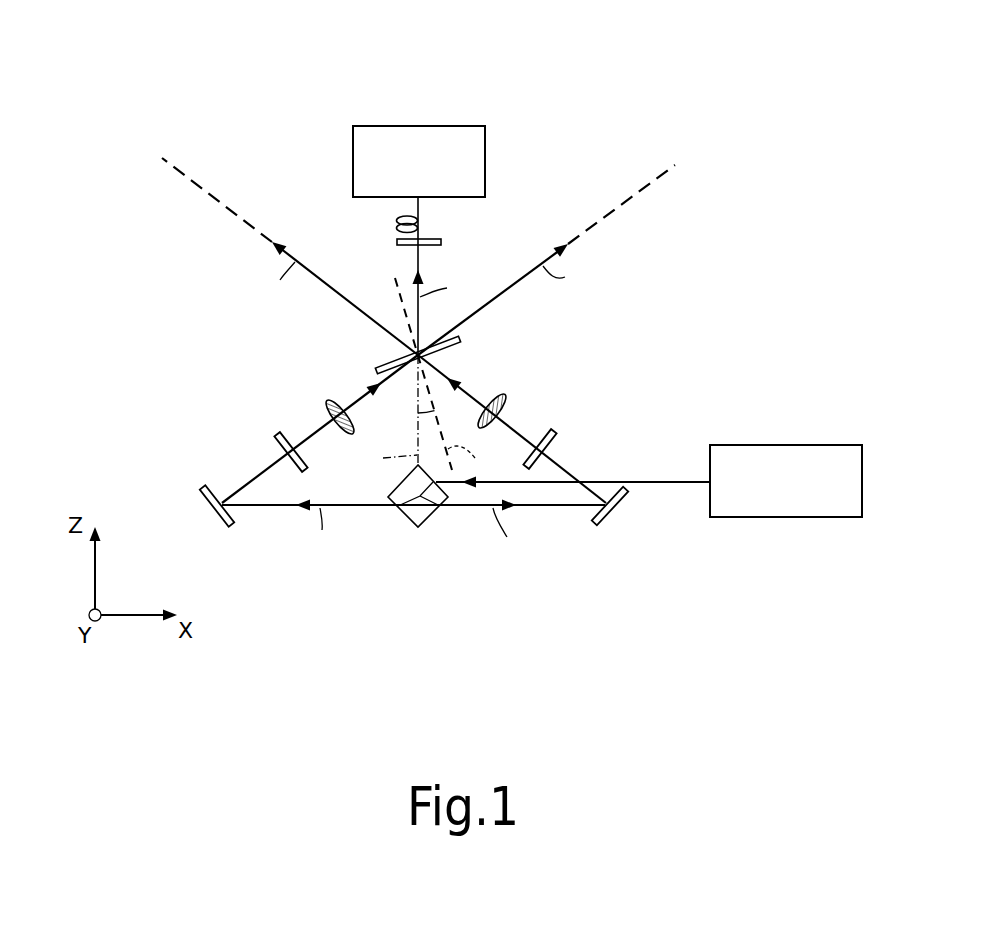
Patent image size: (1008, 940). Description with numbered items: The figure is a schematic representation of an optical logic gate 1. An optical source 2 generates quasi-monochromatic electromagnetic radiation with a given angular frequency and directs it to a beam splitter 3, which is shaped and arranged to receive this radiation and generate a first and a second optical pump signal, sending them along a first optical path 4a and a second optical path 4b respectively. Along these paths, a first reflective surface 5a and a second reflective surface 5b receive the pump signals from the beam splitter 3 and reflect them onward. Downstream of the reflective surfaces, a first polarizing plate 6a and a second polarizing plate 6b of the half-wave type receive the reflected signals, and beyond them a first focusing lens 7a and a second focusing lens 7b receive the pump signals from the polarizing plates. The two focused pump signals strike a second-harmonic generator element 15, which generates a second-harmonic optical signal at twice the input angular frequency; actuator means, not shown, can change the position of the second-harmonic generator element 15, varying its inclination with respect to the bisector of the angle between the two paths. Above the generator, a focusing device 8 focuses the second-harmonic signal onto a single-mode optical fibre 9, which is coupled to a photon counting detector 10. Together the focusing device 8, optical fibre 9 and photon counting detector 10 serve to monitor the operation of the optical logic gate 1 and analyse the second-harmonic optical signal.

The optical logic gate 1 is at (721, 281).
The optical source 2 is at (778, 445).
The beam splitter 3 is at (427, 519).
The first optical path 4a is at (268, 389).
The second optical path 4b is at (618, 355).
The first reflective surface 5a is at (202, 505).
The second reflective surface 5b is at (627, 505).
The first polarizing plate 6a is at (277, 448).
The second polarizing plate 6b is at (555, 434).
The first focusing lens 7a is at (328, 401).
The second focusing lens 7b is at (507, 398).
The focusing device 8 is at (441, 242).
The optical fibre 9 is at (397, 223).
The photon counting detector 10 is at (427, 126).
The second-harmonic generator element 15 is at (442, 347).